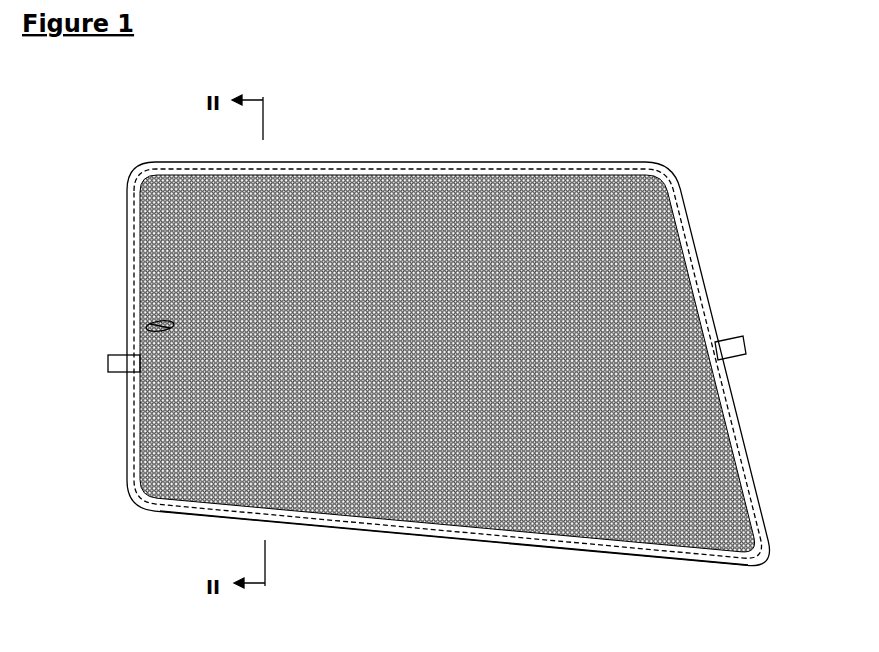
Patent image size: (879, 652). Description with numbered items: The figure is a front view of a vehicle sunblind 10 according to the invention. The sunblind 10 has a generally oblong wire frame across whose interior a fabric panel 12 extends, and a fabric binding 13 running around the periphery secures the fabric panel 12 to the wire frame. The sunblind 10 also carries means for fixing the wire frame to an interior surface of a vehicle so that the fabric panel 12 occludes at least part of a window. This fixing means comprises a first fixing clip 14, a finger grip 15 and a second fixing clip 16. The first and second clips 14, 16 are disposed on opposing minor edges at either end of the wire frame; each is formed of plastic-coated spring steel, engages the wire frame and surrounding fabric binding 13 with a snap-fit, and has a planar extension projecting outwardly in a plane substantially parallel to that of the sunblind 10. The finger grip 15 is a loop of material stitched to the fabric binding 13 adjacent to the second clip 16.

The sunblind 10 is at (712, 130).
The fabric panel 12 is at (172, 200).
The fabric binding 13 is at (442, 536).
The first fixing clip 14 is at (735, 350).
The finger grip 15 is at (150, 323).
The second fixing clip 16 is at (113, 364).